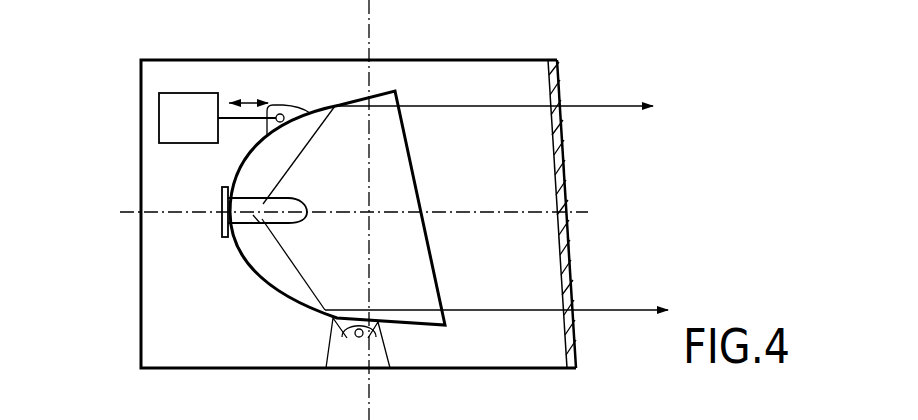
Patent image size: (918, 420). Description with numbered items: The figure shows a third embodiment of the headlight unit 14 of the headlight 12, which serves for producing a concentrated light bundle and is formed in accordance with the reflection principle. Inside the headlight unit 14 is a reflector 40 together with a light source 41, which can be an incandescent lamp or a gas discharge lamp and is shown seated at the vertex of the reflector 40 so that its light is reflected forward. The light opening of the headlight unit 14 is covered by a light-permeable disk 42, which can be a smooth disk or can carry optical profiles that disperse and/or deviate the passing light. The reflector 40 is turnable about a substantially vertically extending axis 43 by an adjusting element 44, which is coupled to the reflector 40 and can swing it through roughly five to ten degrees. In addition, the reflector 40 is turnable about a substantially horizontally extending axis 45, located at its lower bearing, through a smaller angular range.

The headlamp 12 is at (66, 12).
The headlight unit 14 is at (128, 276).
The reflector 40 is at (280, 297).
The light source 41 is at (257, 224).
The light-permeable disk 42 is at (565, 180).
The vertically extending axis 43 is at (371, 18).
The adjusting element 44 is at (183, 100).
The horizontally extending axis 45 is at (358, 340).